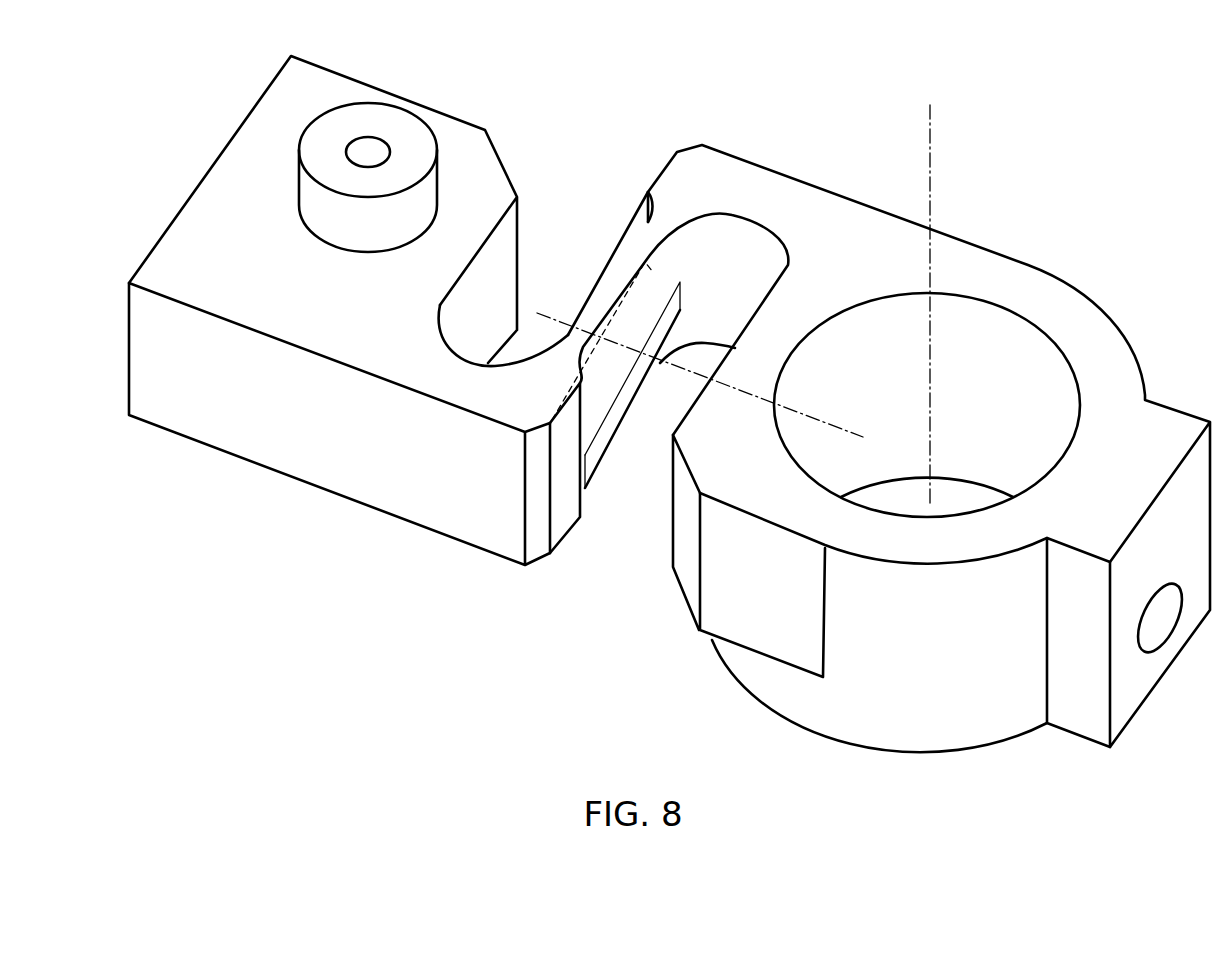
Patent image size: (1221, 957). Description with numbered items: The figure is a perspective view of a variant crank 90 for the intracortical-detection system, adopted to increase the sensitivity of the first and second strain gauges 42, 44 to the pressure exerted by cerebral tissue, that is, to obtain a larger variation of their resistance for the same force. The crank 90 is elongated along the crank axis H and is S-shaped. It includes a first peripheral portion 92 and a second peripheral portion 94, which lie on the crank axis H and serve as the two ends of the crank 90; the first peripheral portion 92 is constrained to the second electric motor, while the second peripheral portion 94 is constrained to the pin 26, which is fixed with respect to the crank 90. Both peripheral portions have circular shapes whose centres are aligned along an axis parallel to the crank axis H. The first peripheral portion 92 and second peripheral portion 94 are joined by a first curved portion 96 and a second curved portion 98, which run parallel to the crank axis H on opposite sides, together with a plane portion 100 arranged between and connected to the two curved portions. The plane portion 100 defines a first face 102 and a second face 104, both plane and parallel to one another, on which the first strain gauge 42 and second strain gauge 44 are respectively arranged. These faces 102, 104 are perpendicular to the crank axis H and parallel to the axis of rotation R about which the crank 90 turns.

The crank 90 is at (851, 302).
The first peripheral portion 92 is at (1095, 333).
The second peripheral portion 94 is at (203, 210).
The first curved portion 96 is at (763, 180).
The second curved portion 98 is at (421, 380).
The plane portion 100 is at (608, 290).
The first face 102 is at (586, 444).
The second face 104 is at (638, 226).
The pin 26 is at (417, 135).
The first strain gauge 42 is at (640, 366).
The second strain gauge 44 is at (602, 303).
The axis of rotation R is at (937, 134).
The crank axis H is at (808, 413).